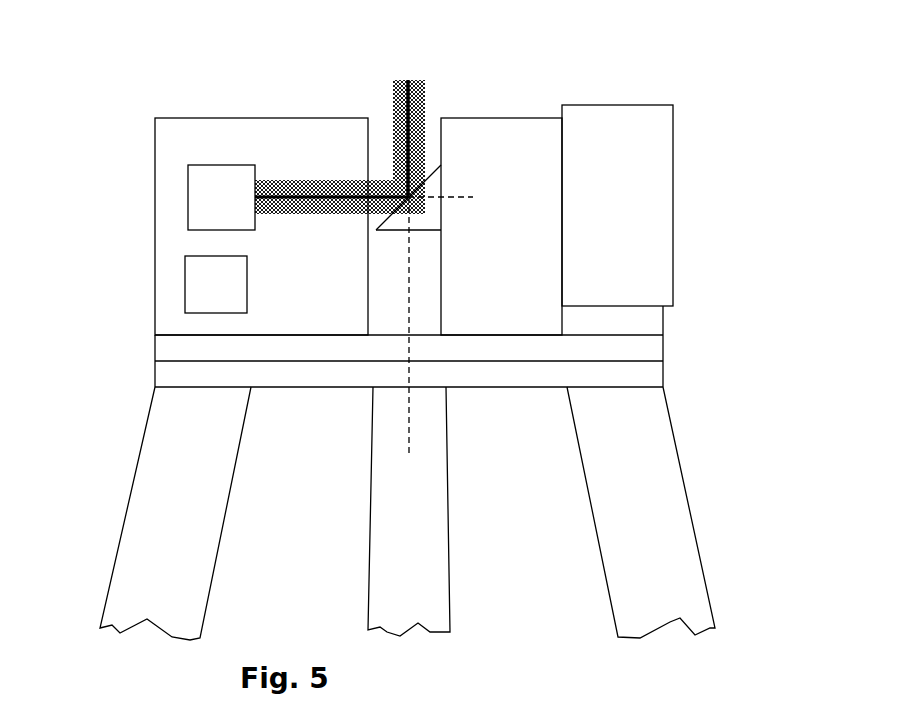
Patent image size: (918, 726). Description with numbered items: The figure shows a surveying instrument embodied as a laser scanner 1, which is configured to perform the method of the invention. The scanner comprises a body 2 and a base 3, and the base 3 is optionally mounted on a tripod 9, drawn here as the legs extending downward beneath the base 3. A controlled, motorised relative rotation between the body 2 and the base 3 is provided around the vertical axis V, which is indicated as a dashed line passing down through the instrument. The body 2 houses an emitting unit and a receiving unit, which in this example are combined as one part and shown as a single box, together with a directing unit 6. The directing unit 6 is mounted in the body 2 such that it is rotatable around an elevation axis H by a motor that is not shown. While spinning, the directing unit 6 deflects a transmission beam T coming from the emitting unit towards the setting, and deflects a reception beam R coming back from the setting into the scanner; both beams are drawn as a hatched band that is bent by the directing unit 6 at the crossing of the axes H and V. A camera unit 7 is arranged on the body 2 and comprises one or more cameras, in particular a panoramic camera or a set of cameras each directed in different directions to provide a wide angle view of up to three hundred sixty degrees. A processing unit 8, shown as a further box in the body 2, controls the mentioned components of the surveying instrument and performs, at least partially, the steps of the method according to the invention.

The laser scanner 1 is at (432, 325).
The body 2 is at (98, 125).
The base 3 is at (98, 360).
The directing unit 6 is at (420, 222).
The camera unit 7 is at (608, 222).
The processing unit 8 is at (206, 298).
The tripod 9 is at (98, 390).
The transmission beam T is at (403, 110).
The reception beam R is at (418, 65).
The elevation axis H is at (455, 197).
The axis V is at (410, 417).